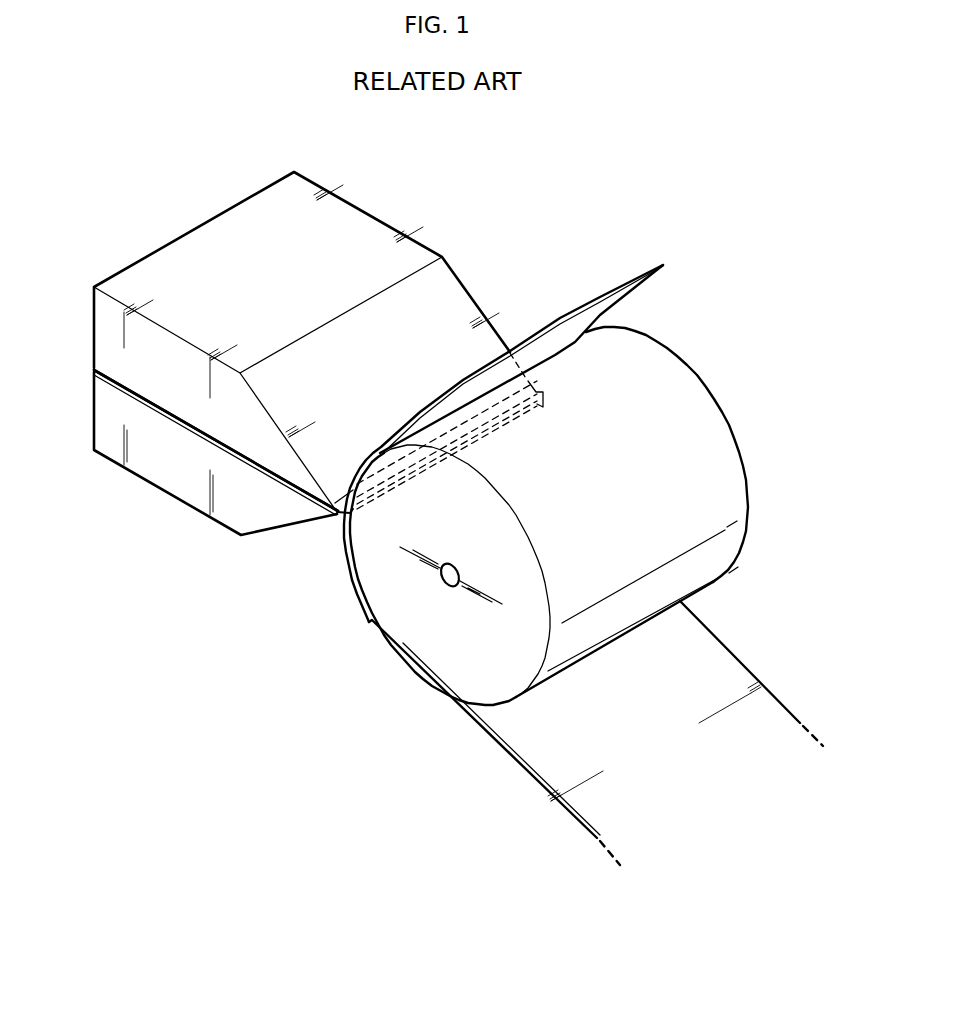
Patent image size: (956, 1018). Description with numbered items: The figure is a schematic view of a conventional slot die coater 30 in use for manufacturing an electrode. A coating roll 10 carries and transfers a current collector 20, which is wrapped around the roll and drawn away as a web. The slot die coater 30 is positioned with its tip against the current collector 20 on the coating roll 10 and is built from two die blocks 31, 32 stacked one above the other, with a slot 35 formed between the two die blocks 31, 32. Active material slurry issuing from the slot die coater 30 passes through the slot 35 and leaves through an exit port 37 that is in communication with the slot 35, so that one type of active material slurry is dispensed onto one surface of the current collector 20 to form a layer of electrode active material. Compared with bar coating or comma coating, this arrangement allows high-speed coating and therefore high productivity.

The coating roll 10 is at (430, 643).
The current collector 20 is at (528, 757).
The slot die coater 30 is at (294, 351).
The die block 31 is at (93, 413).
The die block 32 is at (93, 330).
The slot 35 is at (187, 423).
The exit port 37 is at (333, 518).